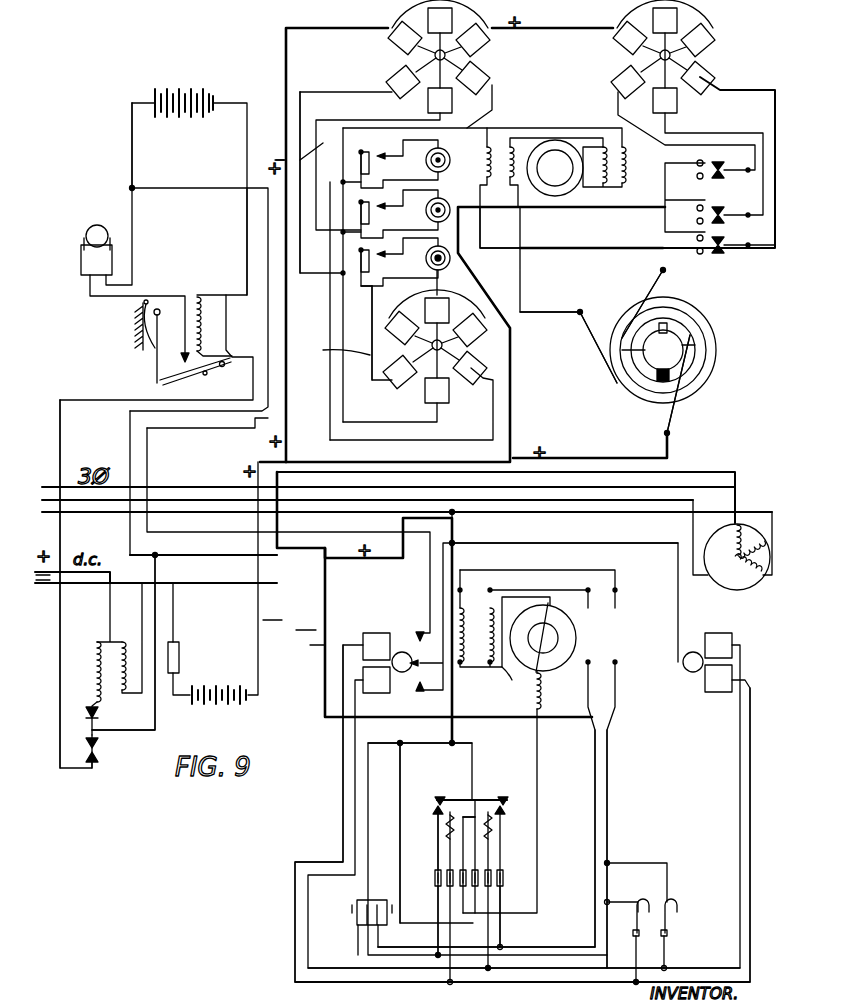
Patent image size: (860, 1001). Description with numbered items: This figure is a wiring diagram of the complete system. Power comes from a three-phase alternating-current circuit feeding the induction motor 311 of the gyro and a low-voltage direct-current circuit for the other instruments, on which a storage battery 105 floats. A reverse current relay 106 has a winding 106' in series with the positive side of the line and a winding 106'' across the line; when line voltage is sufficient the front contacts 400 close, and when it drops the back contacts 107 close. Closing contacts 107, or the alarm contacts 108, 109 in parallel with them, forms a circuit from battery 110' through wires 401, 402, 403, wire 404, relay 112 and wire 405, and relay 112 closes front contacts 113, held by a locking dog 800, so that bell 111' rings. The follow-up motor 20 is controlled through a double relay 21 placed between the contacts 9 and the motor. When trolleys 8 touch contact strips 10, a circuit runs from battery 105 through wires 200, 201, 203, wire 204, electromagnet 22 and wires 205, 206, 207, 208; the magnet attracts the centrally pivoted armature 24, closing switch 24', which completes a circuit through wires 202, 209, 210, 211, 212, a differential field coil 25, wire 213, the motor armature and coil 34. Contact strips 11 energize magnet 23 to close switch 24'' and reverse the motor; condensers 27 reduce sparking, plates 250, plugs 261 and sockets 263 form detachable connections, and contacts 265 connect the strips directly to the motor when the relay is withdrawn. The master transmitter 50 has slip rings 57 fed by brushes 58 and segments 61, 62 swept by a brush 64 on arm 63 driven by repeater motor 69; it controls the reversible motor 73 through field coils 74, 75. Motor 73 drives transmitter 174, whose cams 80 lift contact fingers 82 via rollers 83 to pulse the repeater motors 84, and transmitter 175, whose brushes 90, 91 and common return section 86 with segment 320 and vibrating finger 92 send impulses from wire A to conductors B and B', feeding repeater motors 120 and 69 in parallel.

The battery 110' is at (200, 91).
The wire 401 is at (134, 158).
The wire 402 is at (170, 188).
The wire 405 is at (247, 240).
The bell 111' is at (100, 250).
The relay 112 is at (196, 296).
The locking dog 800 is at (155, 376).
The front contacts 113 is at (183, 376).
The wire 404 is at (61, 600).
The coil 106' is at (80, 681).
The coil 106'' is at (118, 682).
The front contacts 400 is at (79, 715).
The back contacts 107 is at (97, 746).
The wire 403 is at (155, 716).
The storage battery 105 is at (240, 706).
The wire 208 is at (180, 625).
The wire 200 is at (325, 645).
The wire 207 is at (221, 573).
The wire 201 is at (400, 560).
The wire 202 is at (453, 527).
The wire 203 is at (453, 553).
The wire 209 is at (453, 699).
The wire 206 is at (420, 735).
The wire 210 is at (401, 760).
The wire 204 is at (343, 802).
The armature 24 is at (471, 790).
The switch 24' is at (423, 803).
The switch 24'' is at (532, 803).
The electro-magnet 22 is at (446, 826).
The electro-magnet 23 is at (500, 819).
The double relay 21 is at (496, 833).
The wire 211 is at (438, 859).
The hole 263 is at (436, 877).
The plug 261 is at (437, 900).
The plate 250 is at (505, 891).
The condenser 27 is at (352, 926).
The wire 205 is at (595, 771).
The wire 212 is at (608, 817).
The reverse current relay 106 is at (655, 917).
The contact 265 is at (655, 950).
The trolley 8 is at (547, 662).
The contacts 9 is at (544, 637).
The contact strips 10 is at (547, 662).
The contact strips 11 is at (547, 663).
The alarm contact 109 is at (416, 662).
The alarm contact 108 is at (424, 654).
The differential field coil 25 is at (466, 627).
The wire 213 is at (508, 683).
The follow-up motor 20 is at (554, 678).
The coil 34 is at (545, 707).
The induction motor 311 is at (739, 557).
The repeater motor 120 is at (485, 46).
The repeater motors 84 is at (714, 46).
The repeater motor 69 is at (461, 386).
The brush 90 is at (426, 150).
The brush 91 is at (430, 170).
The finger 92 is at (370, 171).
The transmitter 175 is at (366, 208).
The common return section 86 is at (431, 257).
The field coil 74 is at (489, 161).
The segment 320 is at (480, 170).
The field coil 75 is at (603, 146).
The reversible motor 73 is at (582, 180).
The transmitter 174 is at (642, 169).
The cams 80 is at (697, 172).
The rollers 83 is at (700, 189).
The contact fingers 82 is at (718, 177).
The wire A is at (480, 279).
The conductors B is at (316, 182).
The conductors B' is at (336, 333).
The brushes 58 is at (653, 284).
The slip rings 57 is at (700, 300).
The master transmitter 50 is at (718, 353).
The contact segment 61 is at (663, 350).
The contact segment 62 is at (663, 350).
The arm 63 is at (665, 362).
The brush 64 is at (672, 421).